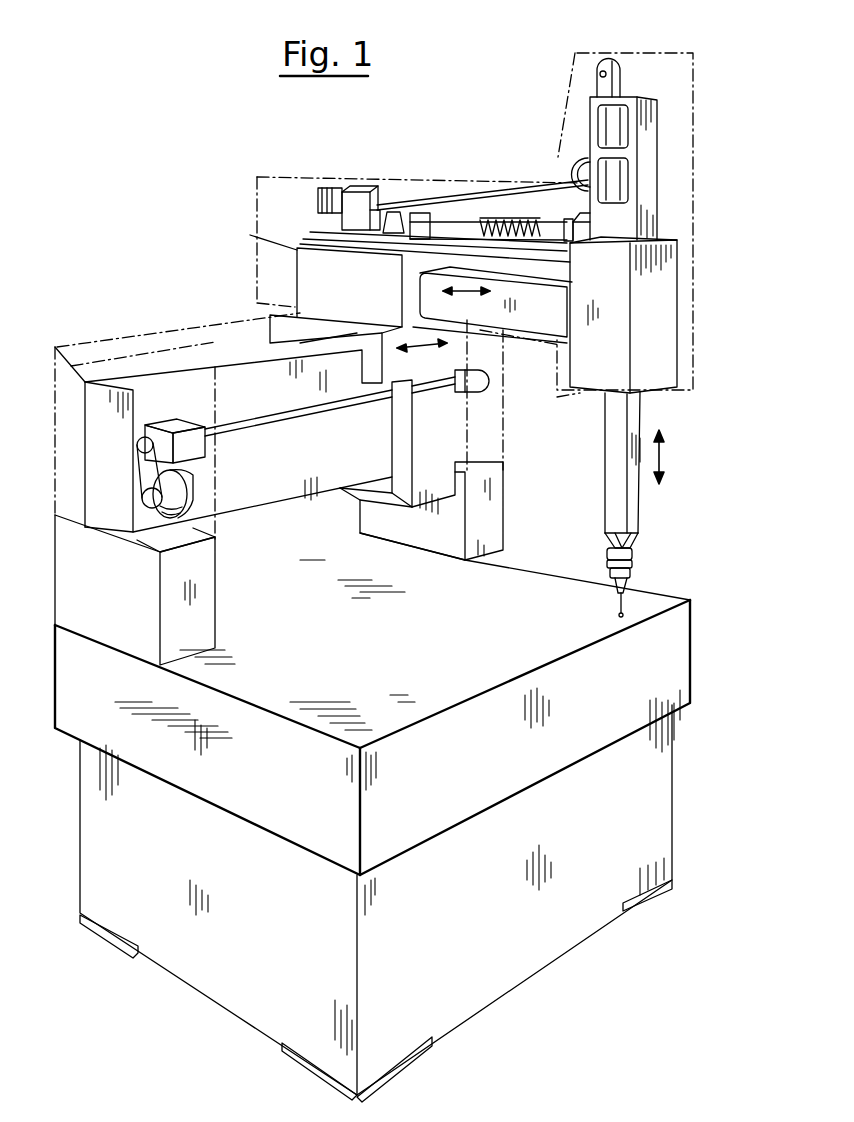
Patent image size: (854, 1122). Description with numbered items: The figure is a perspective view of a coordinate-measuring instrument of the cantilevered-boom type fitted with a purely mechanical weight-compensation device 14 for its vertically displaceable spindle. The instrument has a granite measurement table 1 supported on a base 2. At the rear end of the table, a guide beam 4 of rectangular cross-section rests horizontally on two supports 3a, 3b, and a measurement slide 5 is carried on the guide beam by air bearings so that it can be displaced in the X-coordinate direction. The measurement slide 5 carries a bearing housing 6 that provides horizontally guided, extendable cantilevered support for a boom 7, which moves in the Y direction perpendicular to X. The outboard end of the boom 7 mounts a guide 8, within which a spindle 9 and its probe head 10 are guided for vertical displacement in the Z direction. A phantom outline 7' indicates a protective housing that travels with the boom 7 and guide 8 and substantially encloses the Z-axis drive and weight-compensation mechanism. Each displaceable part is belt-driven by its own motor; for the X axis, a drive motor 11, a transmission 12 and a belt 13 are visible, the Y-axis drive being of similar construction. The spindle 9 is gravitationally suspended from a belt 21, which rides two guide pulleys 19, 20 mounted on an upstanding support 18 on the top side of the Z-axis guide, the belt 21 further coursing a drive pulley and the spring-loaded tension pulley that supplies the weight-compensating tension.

The measurement table 1 is at (663, 602).
The base 2 is at (533, 992).
The support 3a is at (205, 612).
The support 3b is at (497, 505).
The guide beam 4 is at (110, 372).
The measurement slide 5 is at (280, 335).
The bearing housing 6 is at (297, 250).
The boom 7 is at (484, 368).
The phantom outline 7' is at (642, 225).
The guide 8 is at (660, 382).
The spindle 9 is at (604, 511).
The probe head 10 is at (633, 570).
The drive motor 11 is at (188, 490).
The transmission 12 is at (170, 422).
The belt 13 is at (272, 432).
The compensation device 14 is at (468, 157).
The upstanding support 18 is at (642, 153).
The guide pulley 19 is at (612, 57).
The guide pulley 20 is at (588, 178).
The belt 21 is at (427, 180).